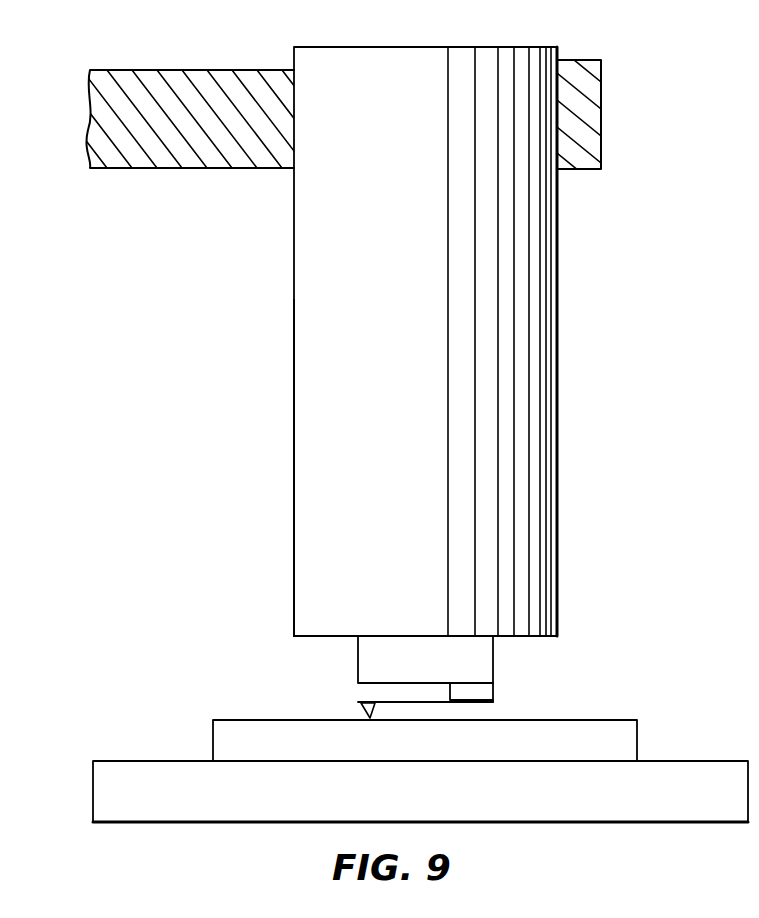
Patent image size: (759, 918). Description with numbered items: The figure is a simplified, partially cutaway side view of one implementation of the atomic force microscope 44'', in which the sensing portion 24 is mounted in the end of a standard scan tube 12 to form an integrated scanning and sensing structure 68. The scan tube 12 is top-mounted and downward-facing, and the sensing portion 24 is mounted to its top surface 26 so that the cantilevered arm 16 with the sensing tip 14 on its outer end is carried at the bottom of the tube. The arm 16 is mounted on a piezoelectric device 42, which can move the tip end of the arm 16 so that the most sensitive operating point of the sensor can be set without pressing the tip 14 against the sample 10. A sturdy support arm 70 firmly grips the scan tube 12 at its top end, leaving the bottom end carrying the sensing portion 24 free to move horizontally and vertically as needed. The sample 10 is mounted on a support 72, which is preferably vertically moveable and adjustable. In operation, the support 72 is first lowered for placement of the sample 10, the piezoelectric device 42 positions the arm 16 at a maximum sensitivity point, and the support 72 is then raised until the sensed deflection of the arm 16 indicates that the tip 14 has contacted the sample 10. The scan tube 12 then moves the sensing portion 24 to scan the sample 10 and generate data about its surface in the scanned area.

The sample 10 is at (605, 730).
The scan tube 12 is at (439, 317).
The sensing tip 14 is at (360, 706).
The cantilevered arm 16 is at (412, 703).
The sensing portion 24 is at (348, 666).
The top surface 26 is at (312, 637).
The piezoelectric device 42 is at (493, 692).
The atomic force microscope 44'' is at (185, 485).
The integrated scanning and sensing structure 68 is at (282, 539).
The support arm 70 is at (248, 169).
The support 72 is at (708, 773).